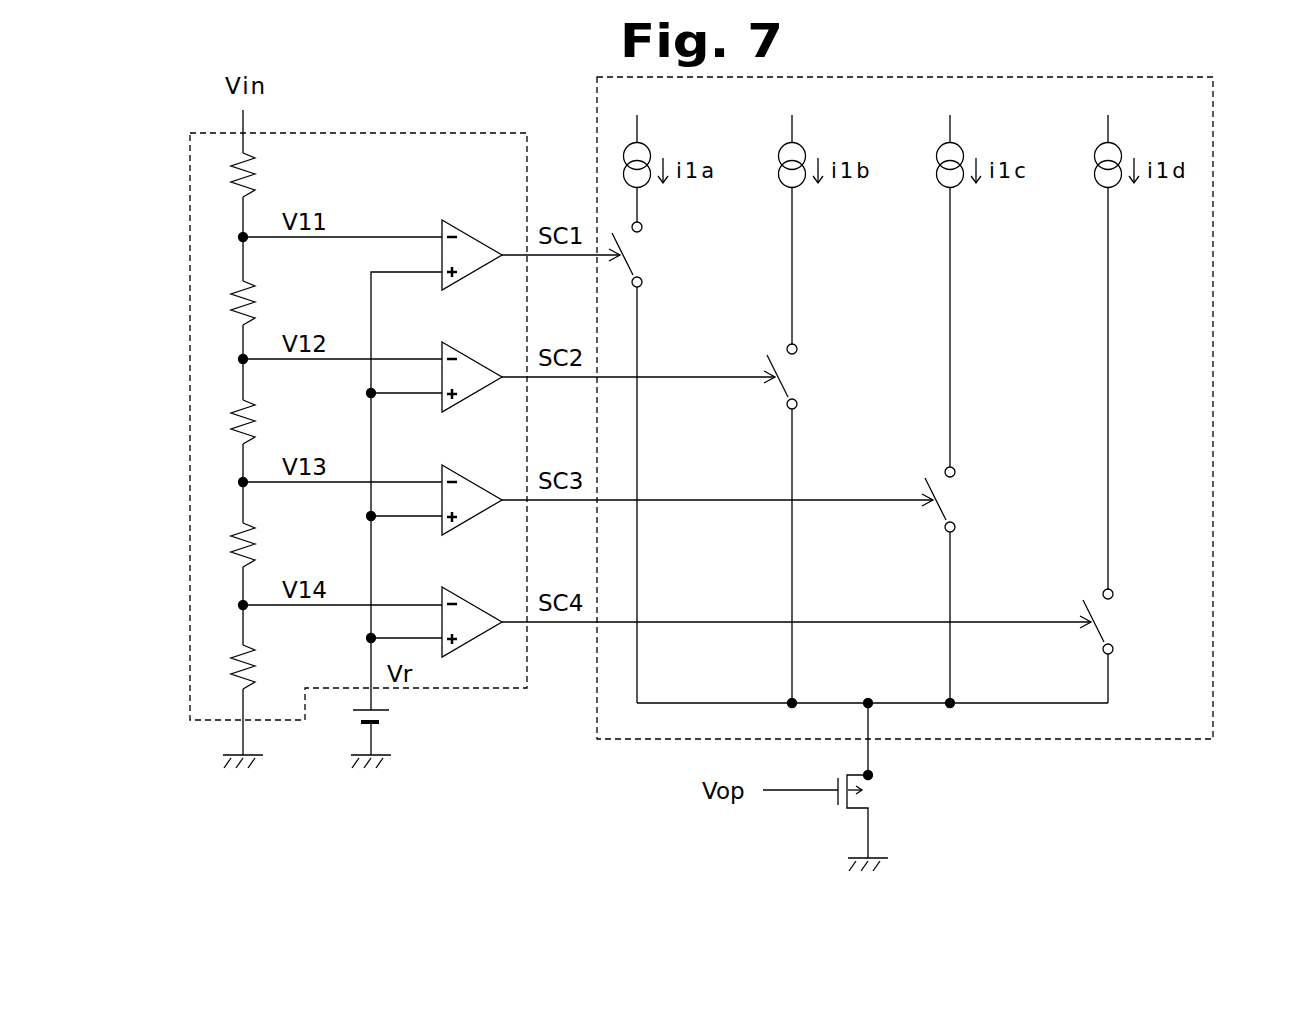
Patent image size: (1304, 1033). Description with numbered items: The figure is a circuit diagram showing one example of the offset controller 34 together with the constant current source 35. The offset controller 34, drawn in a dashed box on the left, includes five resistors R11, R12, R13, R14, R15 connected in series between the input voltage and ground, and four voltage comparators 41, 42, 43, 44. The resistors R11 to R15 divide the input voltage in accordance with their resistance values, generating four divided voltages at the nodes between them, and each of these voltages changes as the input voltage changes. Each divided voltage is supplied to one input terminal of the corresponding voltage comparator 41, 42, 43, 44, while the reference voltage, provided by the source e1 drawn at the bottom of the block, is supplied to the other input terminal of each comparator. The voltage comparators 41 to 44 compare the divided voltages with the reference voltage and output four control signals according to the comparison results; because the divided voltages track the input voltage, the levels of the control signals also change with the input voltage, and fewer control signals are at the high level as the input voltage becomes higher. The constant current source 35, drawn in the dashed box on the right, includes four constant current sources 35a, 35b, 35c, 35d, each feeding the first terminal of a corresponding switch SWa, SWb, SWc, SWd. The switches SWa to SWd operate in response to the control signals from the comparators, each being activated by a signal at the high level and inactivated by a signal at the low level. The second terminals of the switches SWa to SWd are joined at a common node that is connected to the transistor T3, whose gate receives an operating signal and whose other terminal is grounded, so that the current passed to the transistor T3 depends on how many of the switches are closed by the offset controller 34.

The offset controller 34 is at (440, 132).
The constant current source 35 is at (1215, 137).
The constant current source 35a is at (649, 147).
The constant current source 35b is at (804, 147).
The constant current source 35c is at (962, 147).
The constant current source 35d is at (1120, 147).
The voltage comparator 41 is at (471, 237).
The voltage comparator 42 is at (471, 359).
The voltage comparator 43 is at (471, 482).
The voltage comparator 44 is at (471, 604).
The resistor R11 is at (256, 177).
The resistor R12 is at (256, 305).
The resistor R13 is at (256, 424).
The resistor R14 is at (256, 547).
The resistor R15 is at (256, 669).
The reference voltage source e1 is at (380, 725).
The switch SWa is at (641, 266).
The switch SWb is at (796, 388).
The switch SWc is at (954, 511).
The switch SWd is at (1112, 633).
The transistor T3 is at (869, 802).